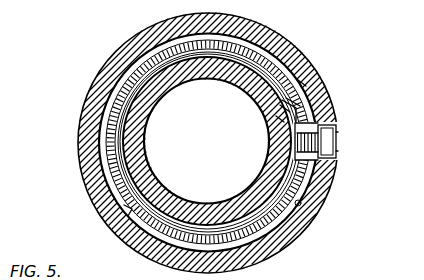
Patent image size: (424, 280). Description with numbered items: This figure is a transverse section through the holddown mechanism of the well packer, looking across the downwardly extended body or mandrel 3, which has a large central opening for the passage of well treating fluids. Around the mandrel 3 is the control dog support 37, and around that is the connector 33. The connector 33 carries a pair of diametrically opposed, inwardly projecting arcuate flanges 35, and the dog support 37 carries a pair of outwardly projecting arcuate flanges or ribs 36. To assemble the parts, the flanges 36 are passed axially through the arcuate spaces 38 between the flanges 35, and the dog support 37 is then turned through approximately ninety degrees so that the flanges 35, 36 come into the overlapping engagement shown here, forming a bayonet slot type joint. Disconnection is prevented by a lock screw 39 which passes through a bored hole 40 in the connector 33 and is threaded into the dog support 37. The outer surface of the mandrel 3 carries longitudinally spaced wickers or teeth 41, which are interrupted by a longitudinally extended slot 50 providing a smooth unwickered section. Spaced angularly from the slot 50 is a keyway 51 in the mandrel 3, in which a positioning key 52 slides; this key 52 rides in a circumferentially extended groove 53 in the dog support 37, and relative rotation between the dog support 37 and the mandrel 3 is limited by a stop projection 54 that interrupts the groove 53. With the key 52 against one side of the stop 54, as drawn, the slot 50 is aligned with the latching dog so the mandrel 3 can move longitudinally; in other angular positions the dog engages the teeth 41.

The mandrel 3 is at (176, 205).
The connector 33 is at (314, 101).
The arcuate flanges 35 is at (122, 218).
The arcuate flanges or ribs 36 is at (114, 87).
The control dog support 37 is at (303, 203).
The arcuate spaces 38 is at (233, 36).
The lock screw 39 is at (324, 148).
The bored hole 40 is at (322, 137).
The wickers or teeth 41 is at (168, 68).
The longitudinally extended slot 50 is at (125, 143).
The keyway 51 is at (288, 103).
The positioning key 52 is at (300, 104).
The circumferentially extended groove 53 is at (222, 57).
The stop projection 54 is at (279, 118).